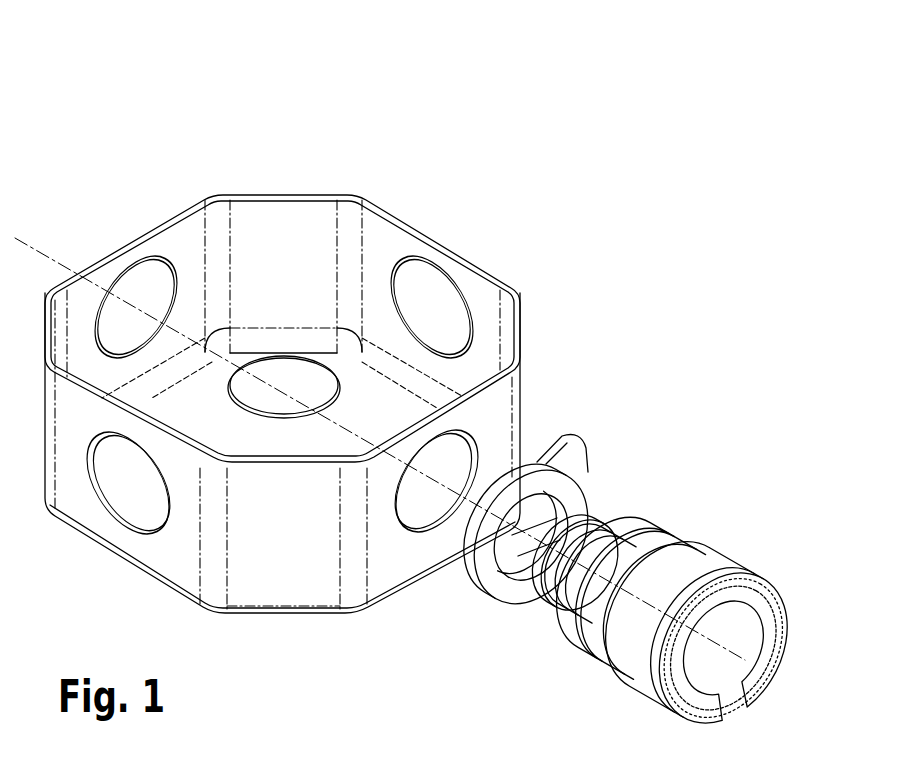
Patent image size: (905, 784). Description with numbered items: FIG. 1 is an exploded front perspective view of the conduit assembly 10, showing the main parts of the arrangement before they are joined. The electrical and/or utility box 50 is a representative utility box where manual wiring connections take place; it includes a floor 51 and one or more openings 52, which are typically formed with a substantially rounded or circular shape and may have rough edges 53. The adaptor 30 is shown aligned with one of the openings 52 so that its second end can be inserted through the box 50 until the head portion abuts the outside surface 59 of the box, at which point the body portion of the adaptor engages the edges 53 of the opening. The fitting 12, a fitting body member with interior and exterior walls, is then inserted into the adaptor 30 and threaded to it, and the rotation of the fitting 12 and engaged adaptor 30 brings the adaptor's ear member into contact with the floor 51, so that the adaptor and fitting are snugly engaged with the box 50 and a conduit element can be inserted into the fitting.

The conduit assembly 10 is at (558, 83).
The fitting 12 is at (735, 515).
The adaptor 30 is at (613, 437).
The electrical and/or utility box 50 is at (293, 217).
The floor 51 is at (213, 425).
The openings 52 is at (138, 272).
The edges 53 is at (440, 520).
The outside surface 59 is at (503, 413).